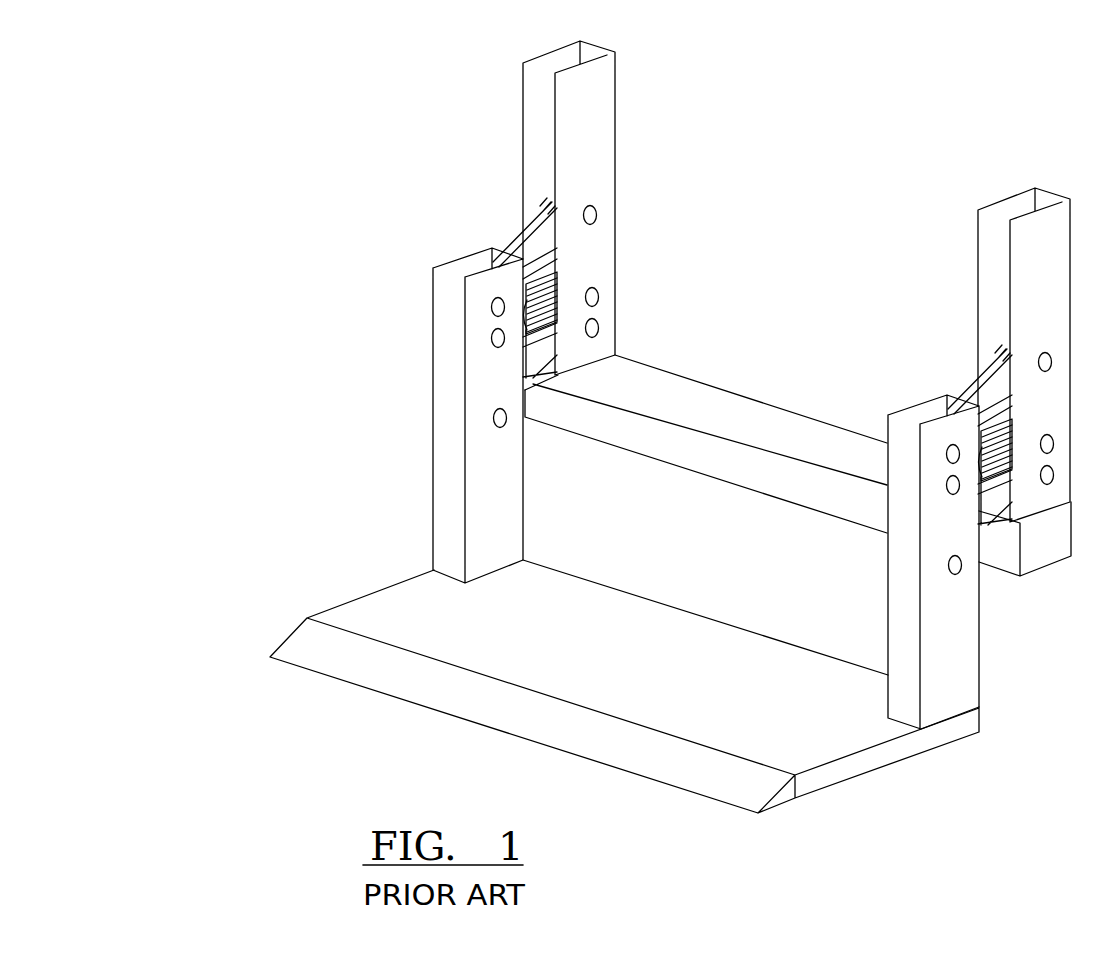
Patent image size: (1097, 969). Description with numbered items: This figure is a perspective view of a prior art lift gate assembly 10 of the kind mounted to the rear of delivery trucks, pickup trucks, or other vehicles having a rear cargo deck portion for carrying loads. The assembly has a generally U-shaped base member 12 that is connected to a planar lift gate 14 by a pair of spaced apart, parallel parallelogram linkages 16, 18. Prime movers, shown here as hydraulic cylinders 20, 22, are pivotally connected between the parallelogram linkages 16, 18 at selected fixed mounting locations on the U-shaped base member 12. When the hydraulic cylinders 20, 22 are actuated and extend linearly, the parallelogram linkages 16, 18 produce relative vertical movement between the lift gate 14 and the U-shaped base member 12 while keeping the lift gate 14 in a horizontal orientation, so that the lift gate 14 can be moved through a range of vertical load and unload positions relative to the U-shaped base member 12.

The lift gate assembly 10 is at (308, 427).
The U-shaped base member 12 is at (725, 407).
The lift gate 14 is at (633, 665).
The parallelogram linkage 16 is at (533, 380).
The parallelogram linkage 18 is at (988, 527).
The hydraulic cylinder 20 is at (523, 168).
The hydraulic cylinder 22 is at (842, 522).